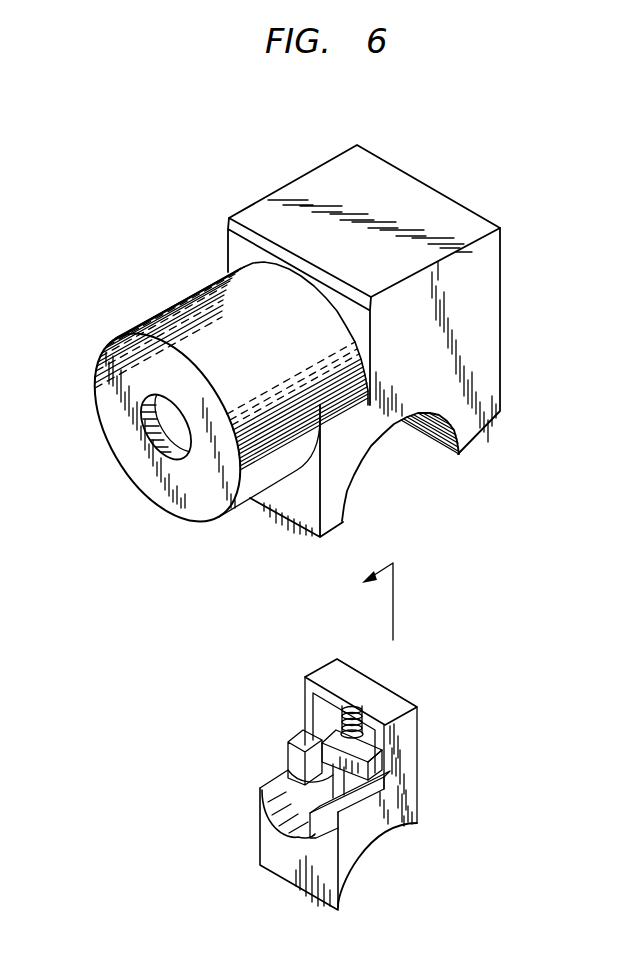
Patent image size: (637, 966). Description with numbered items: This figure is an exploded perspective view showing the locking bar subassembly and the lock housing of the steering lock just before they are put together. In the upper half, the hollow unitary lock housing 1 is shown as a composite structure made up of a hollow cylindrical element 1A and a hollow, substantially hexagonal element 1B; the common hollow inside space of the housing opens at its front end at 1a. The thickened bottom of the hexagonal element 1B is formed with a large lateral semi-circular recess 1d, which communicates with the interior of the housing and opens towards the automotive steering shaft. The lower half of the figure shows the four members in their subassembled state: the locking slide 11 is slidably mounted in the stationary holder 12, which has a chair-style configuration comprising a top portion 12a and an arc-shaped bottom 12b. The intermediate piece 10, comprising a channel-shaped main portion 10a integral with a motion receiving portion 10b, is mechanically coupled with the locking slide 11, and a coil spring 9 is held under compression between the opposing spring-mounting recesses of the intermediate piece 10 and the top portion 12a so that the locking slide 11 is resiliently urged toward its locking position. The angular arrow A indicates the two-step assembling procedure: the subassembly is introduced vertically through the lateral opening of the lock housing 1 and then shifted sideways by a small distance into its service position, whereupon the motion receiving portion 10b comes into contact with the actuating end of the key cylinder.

The lock housing 1 is at (433, 200).
The hollow cylindrical element 1A is at (183, 307).
The hollow hexagonal element 1B is at (308, 182).
The front end opening 1a is at (163, 444).
The semi-circular recess 1d is at (363, 463).
The coil spring 9 is at (353, 720).
The intermediate piece 10 is at (327, 720).
The channel-shaped main portion 10a is at (367, 747).
The motion receiving portion 10b is at (292, 760).
The locking slide 11 is at (347, 780).
The holder 12 is at (412, 782).
The top portion 12a is at (353, 678).
The arc-shaped bottom 12b is at (292, 835).
The angular arrow A is at (397, 583).